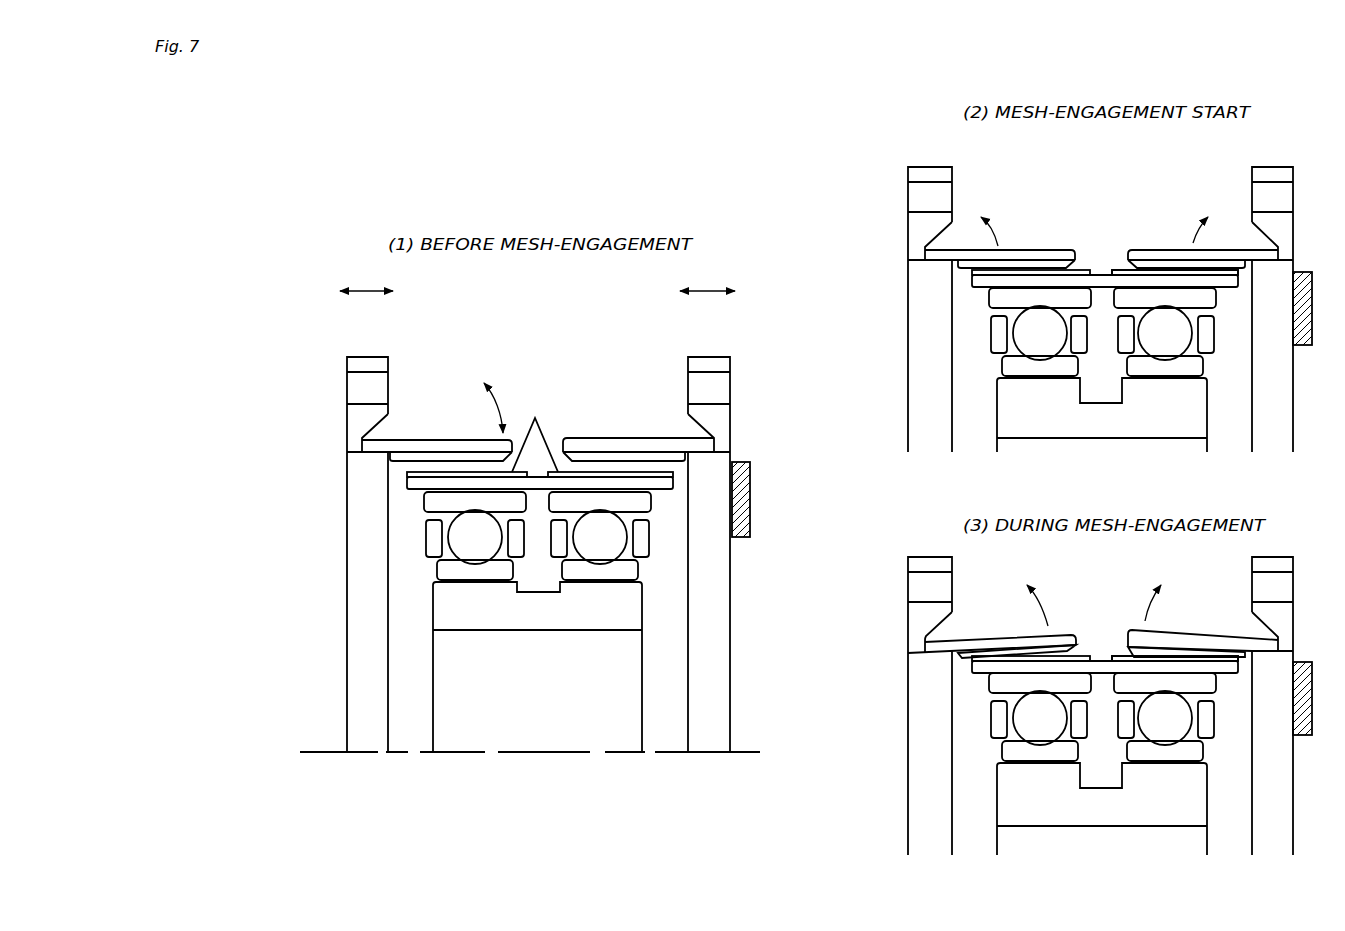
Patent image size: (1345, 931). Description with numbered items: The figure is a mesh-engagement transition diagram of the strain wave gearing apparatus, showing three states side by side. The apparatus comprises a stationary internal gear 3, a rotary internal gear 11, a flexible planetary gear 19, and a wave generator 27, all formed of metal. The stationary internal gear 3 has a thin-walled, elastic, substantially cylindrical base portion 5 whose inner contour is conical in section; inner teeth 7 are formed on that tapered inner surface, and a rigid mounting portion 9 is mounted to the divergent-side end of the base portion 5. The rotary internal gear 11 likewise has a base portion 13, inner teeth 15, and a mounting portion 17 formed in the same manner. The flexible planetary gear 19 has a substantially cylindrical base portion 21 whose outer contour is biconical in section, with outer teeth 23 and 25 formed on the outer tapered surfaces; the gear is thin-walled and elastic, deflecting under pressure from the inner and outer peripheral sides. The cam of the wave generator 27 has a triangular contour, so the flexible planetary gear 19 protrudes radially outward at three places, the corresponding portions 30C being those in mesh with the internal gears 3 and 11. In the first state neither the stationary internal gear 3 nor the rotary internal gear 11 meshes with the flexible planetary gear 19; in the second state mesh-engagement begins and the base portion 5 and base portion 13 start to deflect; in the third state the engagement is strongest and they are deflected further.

The stationary internal gear 3 is at (713, 353).
The base portion 5 is at (648, 441).
The inner teeth 7 is at (620, 458).
The mounting portion 9 is at (727, 384).
The rotary internal gear 11 is at (357, 353).
The base portion 13 is at (473, 444).
The inner teeth 15 is at (460, 455).
The mounting portion 17 is at (356, 385).
The flexible planetary gear 19 is at (420, 492).
The base portion 21 is at (413, 488).
The outer teeth 23 is at (592, 473).
The outer teeth 25 is at (432, 477).
The wave generator 27 is at (650, 600).
The corresponding portions 30C is at (1101, 522).